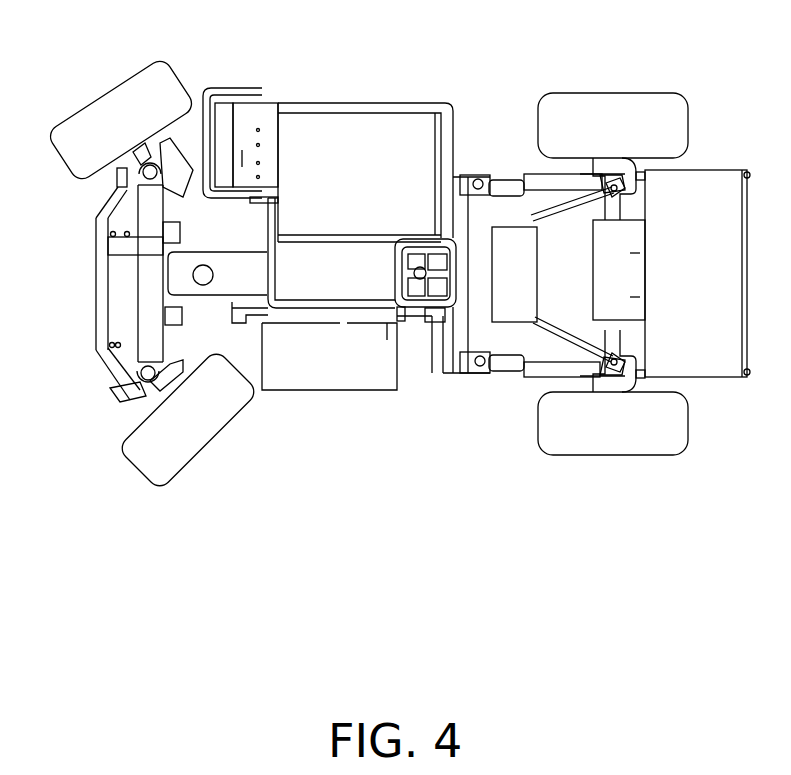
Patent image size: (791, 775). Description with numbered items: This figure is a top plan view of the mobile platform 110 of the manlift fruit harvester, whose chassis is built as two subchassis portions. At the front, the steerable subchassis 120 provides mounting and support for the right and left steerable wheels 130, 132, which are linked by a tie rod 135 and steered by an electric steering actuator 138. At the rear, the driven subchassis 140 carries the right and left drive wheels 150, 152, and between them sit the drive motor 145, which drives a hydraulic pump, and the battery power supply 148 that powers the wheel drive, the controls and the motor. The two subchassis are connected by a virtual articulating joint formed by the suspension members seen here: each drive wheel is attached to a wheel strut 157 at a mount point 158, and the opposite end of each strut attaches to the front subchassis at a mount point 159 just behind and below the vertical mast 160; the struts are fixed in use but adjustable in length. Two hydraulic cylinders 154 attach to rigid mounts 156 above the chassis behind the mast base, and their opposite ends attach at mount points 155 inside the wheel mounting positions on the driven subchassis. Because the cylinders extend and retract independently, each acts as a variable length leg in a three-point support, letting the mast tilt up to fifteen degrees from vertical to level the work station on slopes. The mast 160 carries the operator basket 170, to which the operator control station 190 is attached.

The mobile platform 110 is at (397, 503).
The steerable subchassis 120 is at (287, 402).
The front right steerable wheel 130 is at (174, 64).
The front left steerable wheel 132 is at (191, 468).
The tie rod 135 is at (98, 318).
The steering electric actuator 138 is at (108, 245).
The driven subchassis 140 is at (671, 299).
The drive motor 145 is at (637, 283).
The power supply for drive motor 148 is at (714, 268).
The rear right drive wheel 150 is at (686, 99).
The rear left drive wheel 152 is at (672, 457).
The hydraulic cylinder 154 is at (547, 232).
The mount point for hydraulic cylinder to driven subchassis 155 is at (627, 197).
The mount point for hydraulic cylinder to steerable subchassis 156 is at (518, 228).
The wheel strut 157 is at (530, 176).
The mount point for wheel strut to driven subchassis 158 is at (598, 175).
The mount point for wheel strut to steerable subchassis 159 is at (478, 178).
The vertical mast 160 is at (396, 262).
The operator basket 170 is at (381, 101).
The operator control station 190 is at (262, 105).